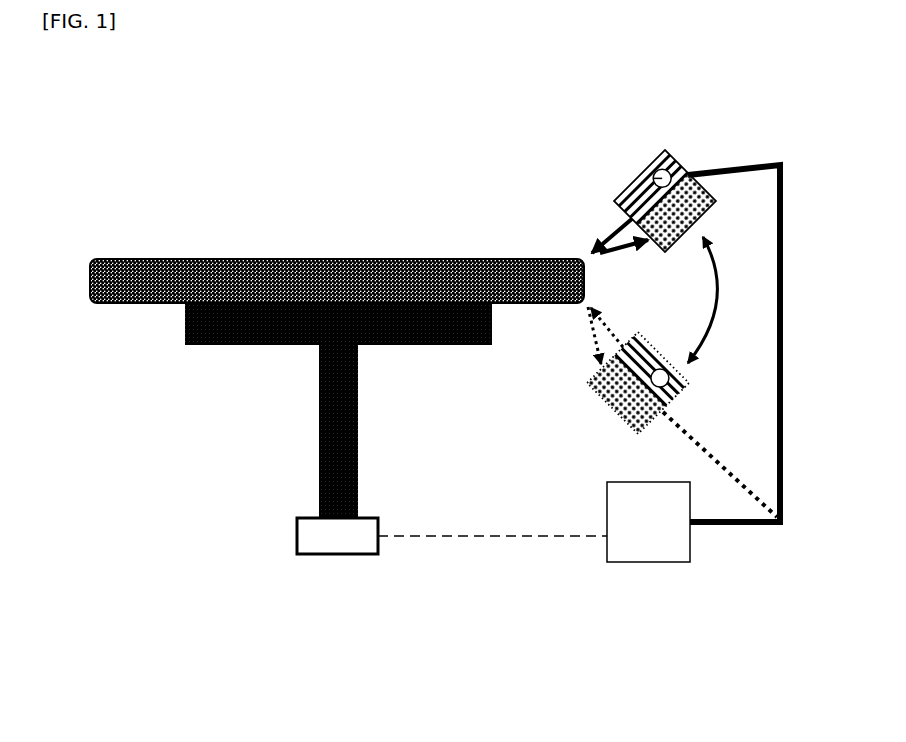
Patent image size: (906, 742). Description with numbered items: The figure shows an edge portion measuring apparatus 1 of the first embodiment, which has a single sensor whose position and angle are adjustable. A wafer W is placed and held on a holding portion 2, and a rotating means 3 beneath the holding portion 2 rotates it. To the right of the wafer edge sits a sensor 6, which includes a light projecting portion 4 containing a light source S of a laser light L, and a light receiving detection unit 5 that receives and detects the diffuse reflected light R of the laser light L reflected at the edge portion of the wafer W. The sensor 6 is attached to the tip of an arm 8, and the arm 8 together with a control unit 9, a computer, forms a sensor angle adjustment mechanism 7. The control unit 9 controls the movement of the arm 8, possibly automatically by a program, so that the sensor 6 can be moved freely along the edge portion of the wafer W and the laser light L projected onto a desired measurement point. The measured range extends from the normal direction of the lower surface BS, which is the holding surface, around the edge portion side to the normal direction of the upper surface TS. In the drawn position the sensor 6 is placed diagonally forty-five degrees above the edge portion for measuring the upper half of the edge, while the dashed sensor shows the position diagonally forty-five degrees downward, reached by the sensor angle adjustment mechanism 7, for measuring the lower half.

The edge portion measuring apparatus 1 is at (58, 136).
The holding portion 2 is at (218, 345).
The rotating means 3 is at (298, 533).
The light projecting portion 4 is at (672, 158).
The light receiving detection unit 5 is at (708, 187).
The sensor 6 is at (686, 237).
The sensor angle adjustment mechanism 7 is at (765, 645).
The arm 8 is at (752, 523).
The control unit 9 is at (670, 562).
The wafer W is at (145, 260).
The light source S is at (648, 172).
The laser light L is at (608, 228).
The diffuse reflected light R is at (620, 253).
The upper surface TS is at (523, 258).
The lower surface BS is at (527, 303).